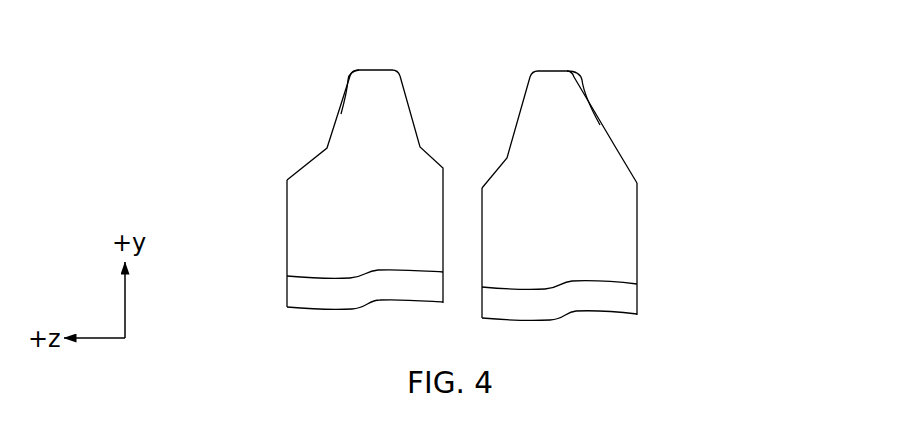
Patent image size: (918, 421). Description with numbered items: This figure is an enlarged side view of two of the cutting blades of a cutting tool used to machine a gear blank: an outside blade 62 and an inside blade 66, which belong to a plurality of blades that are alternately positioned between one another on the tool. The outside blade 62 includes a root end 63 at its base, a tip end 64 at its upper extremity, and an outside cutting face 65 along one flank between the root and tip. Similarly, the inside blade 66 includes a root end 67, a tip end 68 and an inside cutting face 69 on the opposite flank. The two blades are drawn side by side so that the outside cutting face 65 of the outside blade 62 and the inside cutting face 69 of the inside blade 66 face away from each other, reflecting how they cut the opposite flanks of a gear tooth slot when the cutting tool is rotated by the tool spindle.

The outside blade 62 is at (204, 102).
The root end 63 is at (281, 295).
The tip end 64 is at (374, 68).
The outside cutting face 65 is at (333, 127).
The inside blade 66 is at (733, 114).
The root end 67 is at (642, 300).
The tip end 68 is at (556, 67).
The inside cutting face 69 is at (604, 126).